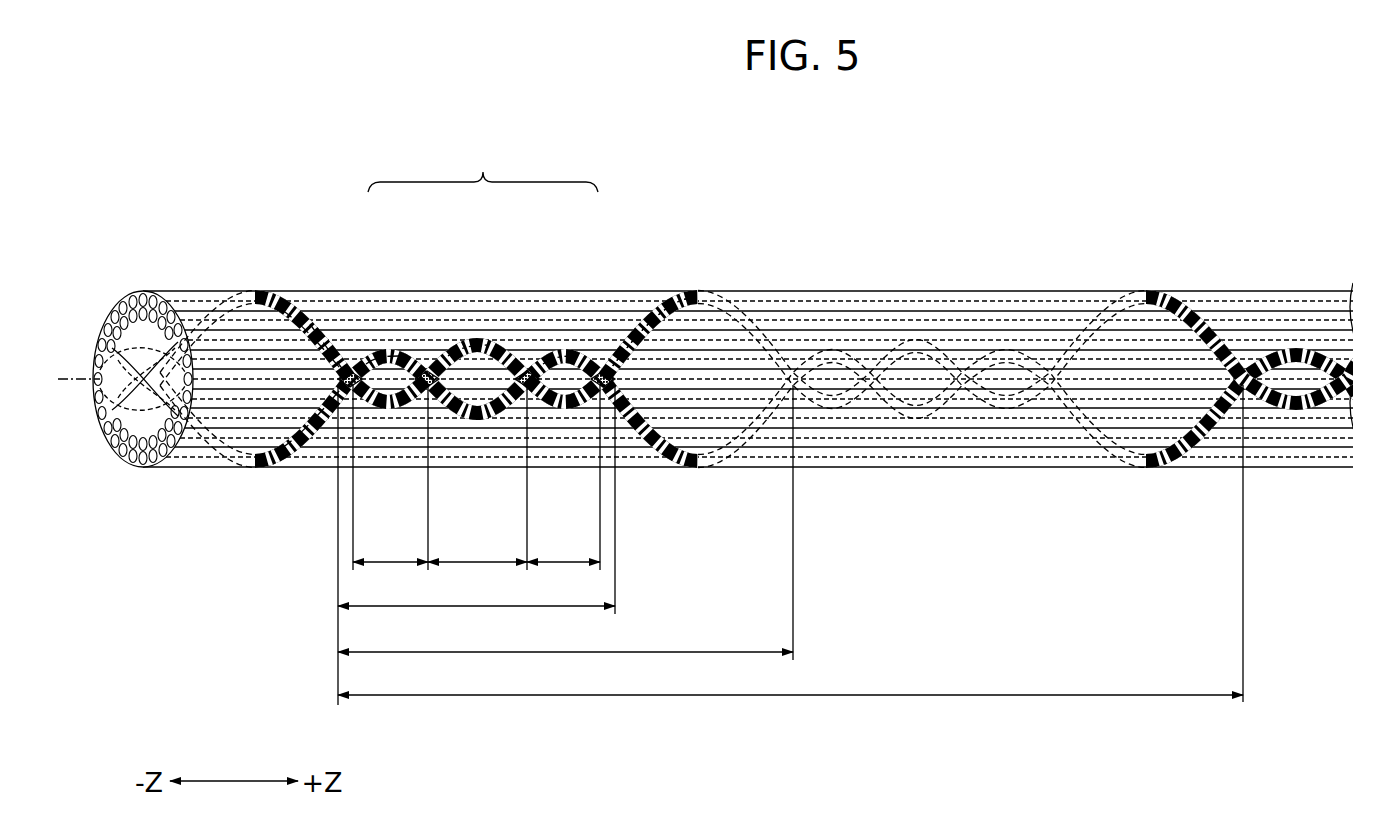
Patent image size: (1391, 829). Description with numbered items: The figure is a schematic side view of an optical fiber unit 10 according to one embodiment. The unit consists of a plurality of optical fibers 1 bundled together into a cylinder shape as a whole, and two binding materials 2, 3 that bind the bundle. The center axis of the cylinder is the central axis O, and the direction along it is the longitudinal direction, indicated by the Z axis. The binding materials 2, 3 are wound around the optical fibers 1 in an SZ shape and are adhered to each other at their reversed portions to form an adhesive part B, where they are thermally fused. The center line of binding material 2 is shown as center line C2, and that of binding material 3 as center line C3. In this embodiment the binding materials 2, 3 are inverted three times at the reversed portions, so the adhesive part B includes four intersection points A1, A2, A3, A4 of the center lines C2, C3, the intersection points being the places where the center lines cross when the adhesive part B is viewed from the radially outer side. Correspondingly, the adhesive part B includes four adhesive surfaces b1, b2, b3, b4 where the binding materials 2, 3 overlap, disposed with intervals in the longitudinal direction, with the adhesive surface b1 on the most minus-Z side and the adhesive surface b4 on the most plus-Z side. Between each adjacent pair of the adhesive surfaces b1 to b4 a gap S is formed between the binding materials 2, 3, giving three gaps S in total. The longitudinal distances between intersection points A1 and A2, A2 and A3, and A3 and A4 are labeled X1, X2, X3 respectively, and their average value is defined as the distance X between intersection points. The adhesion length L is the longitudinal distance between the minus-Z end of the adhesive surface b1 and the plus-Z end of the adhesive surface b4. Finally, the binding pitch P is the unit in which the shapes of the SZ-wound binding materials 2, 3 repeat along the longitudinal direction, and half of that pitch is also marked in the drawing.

The optical fibers 1 is at (128, 463).
The binding material 2 is at (283, 291).
The binding material 3 is at (287, 468).
The optical fiber unit 10 is at (776, 252).
The central axis O is at (69, 372).
The center line of the binding material 2 C2 is at (290, 296).
The center line of the binding material 3 C3 is at (307, 442).
The intersection point A1 is at (350, 372).
The intersection point A2 is at (427, 372).
The intersection point A3 is at (529, 371).
The intersection point A4 is at (605, 370).
The adhesive surface b1 is at (381, 354).
The adhesive surface b2 is at (458, 341).
The adhesive surface b3 is at (517, 365).
The adhesive surface b4 is at (596, 366).
The adhesive part B is at (483, 163).
The gap S is at (394, 390).
The distance between intersection points A1 and A2 X1 is at (390, 477).
The distance between intersection points A2 and A3 X2 is at (477, 477).
The distance between intersection points A3 and A4 X3 is at (563, 477).
The adhesion length L is at (476, 545).
The binding pitch P is at (790, 543).